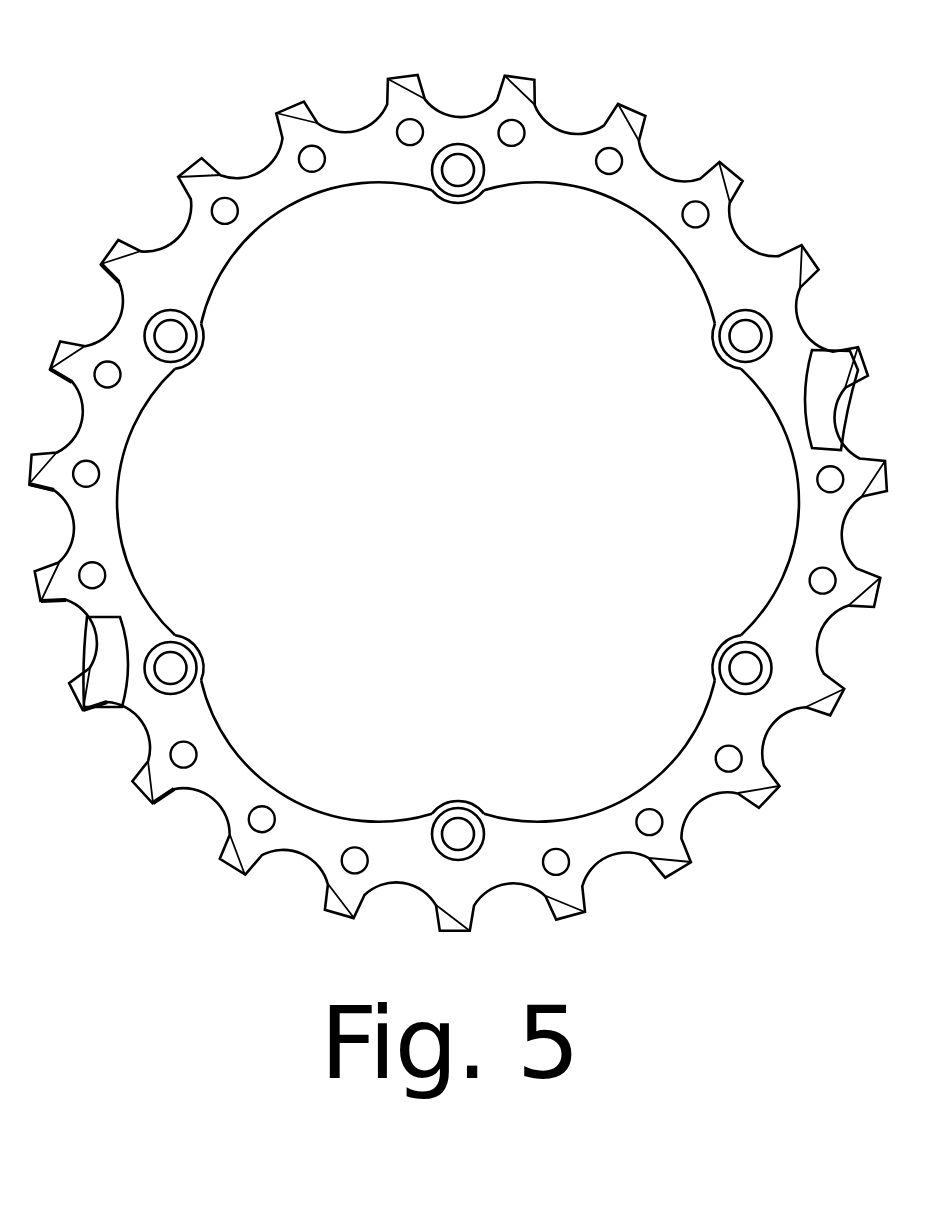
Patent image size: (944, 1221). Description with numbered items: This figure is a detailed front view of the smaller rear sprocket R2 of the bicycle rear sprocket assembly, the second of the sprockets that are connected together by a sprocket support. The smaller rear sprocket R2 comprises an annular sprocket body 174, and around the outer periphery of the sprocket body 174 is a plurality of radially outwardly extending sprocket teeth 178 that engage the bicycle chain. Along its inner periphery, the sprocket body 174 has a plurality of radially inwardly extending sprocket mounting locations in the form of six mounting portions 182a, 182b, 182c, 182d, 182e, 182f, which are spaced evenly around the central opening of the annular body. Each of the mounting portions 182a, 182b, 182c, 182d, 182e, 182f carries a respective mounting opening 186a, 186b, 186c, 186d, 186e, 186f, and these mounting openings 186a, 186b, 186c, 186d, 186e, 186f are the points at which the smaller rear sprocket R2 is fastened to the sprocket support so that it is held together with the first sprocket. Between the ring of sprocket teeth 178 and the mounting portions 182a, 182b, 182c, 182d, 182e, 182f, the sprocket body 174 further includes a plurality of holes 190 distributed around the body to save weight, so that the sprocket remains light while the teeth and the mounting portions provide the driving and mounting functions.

The smaller rear sprocket R2 is at (83, 105).
The sprocket teeth 178 is at (391, 76).
The holes 190 is at (313, 155).
The sprocket body 174 is at (268, 191).
The mounting portion 182a is at (440, 806).
The mounting portion 182b is at (192, 655).
The mounting portion 182c is at (188, 358).
The mounting portion 182d is at (432, 197).
The mounting portion 182e is at (711, 336).
The mounting portion 182f is at (727, 652).
The mounting opening 186a is at (460, 834).
The mounting opening 186b is at (190, 674).
The mounting opening 186c is at (196, 338).
The mounting opening 186d is at (460, 172).
The mounting opening 186e is at (742, 340).
The mounting opening 186f is at (722, 672).